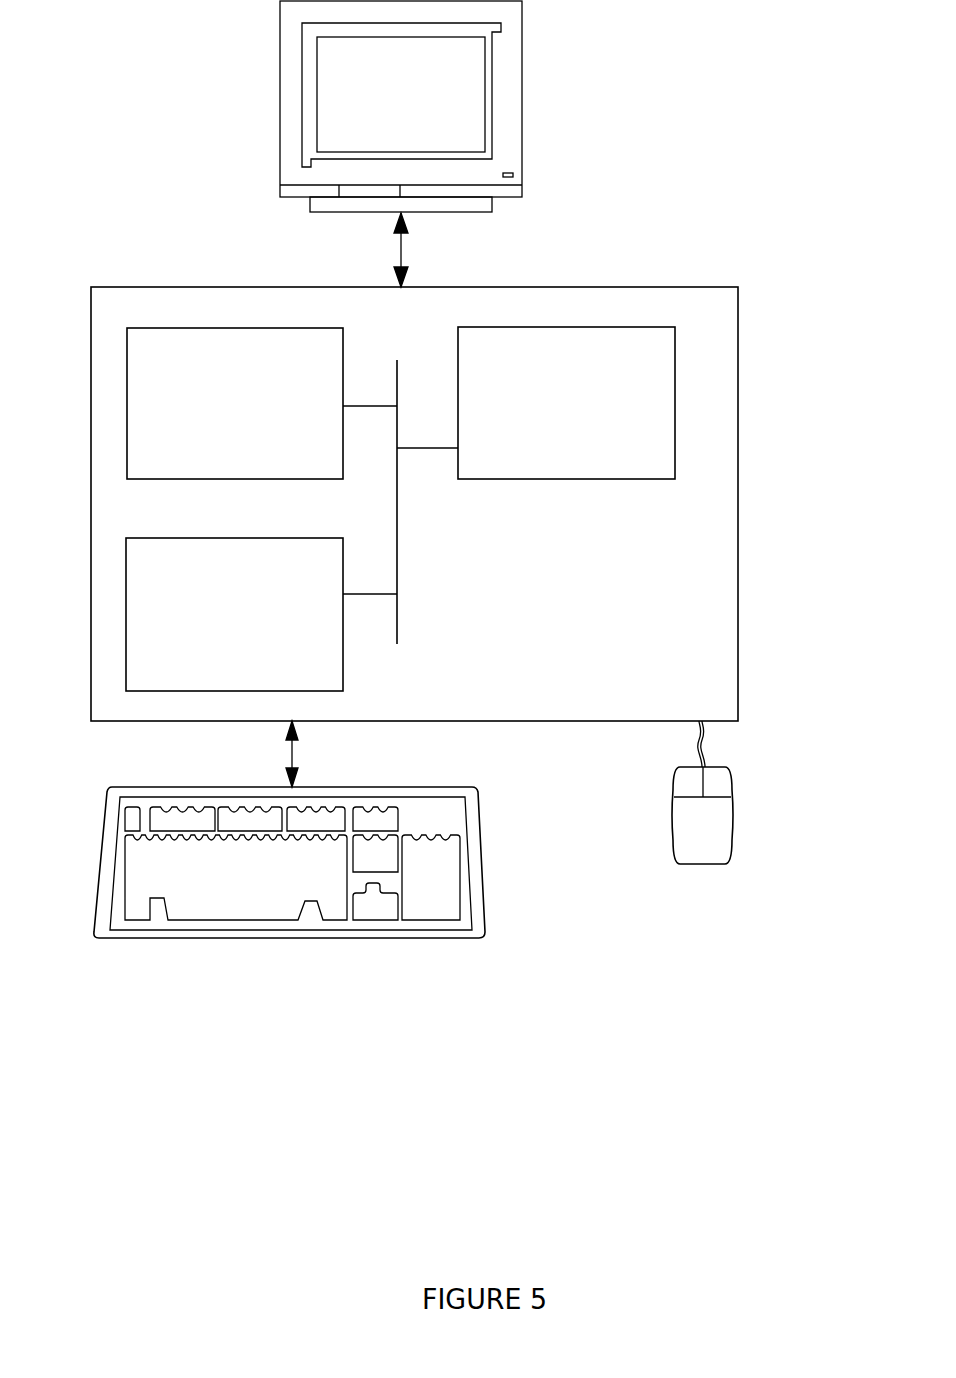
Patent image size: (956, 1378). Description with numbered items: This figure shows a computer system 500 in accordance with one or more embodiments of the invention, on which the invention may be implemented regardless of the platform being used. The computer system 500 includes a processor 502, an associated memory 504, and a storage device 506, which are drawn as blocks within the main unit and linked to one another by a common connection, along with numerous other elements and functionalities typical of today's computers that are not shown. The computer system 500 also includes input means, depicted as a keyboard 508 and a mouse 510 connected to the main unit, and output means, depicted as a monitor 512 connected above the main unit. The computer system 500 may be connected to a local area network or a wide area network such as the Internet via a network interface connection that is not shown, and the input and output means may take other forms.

The computer system 500 is at (713, 163).
The processor 502 is at (563, 413).
The memory 504 is at (215, 415).
The storage device 506 is at (211, 625).
The keyboard 508 is at (205, 898).
The mouse 510 is at (683, 835).
The monitor 512 is at (381, 110).